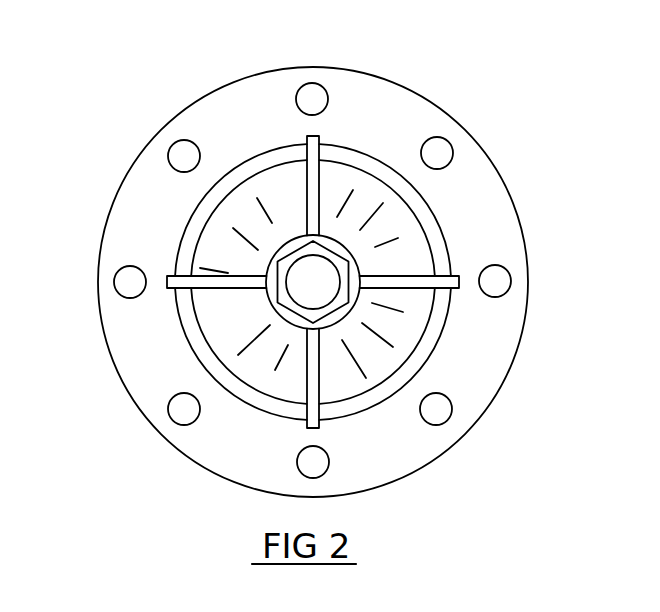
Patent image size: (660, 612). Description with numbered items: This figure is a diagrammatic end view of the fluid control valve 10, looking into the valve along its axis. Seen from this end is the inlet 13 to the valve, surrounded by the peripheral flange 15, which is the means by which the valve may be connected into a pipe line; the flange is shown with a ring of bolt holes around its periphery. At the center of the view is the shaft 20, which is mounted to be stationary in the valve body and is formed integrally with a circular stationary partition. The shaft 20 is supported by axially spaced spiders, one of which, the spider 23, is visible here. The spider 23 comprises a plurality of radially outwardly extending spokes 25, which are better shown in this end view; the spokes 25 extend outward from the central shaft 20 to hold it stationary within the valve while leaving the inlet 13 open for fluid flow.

The fluid control valve 10 is at (344, 274).
The inlet 13 is at (408, 320).
The peripheral flange 15 is at (507, 204).
The shaft 20 is at (305, 287).
The spider 23 is at (331, 235).
The spokes 25 is at (310, 378).